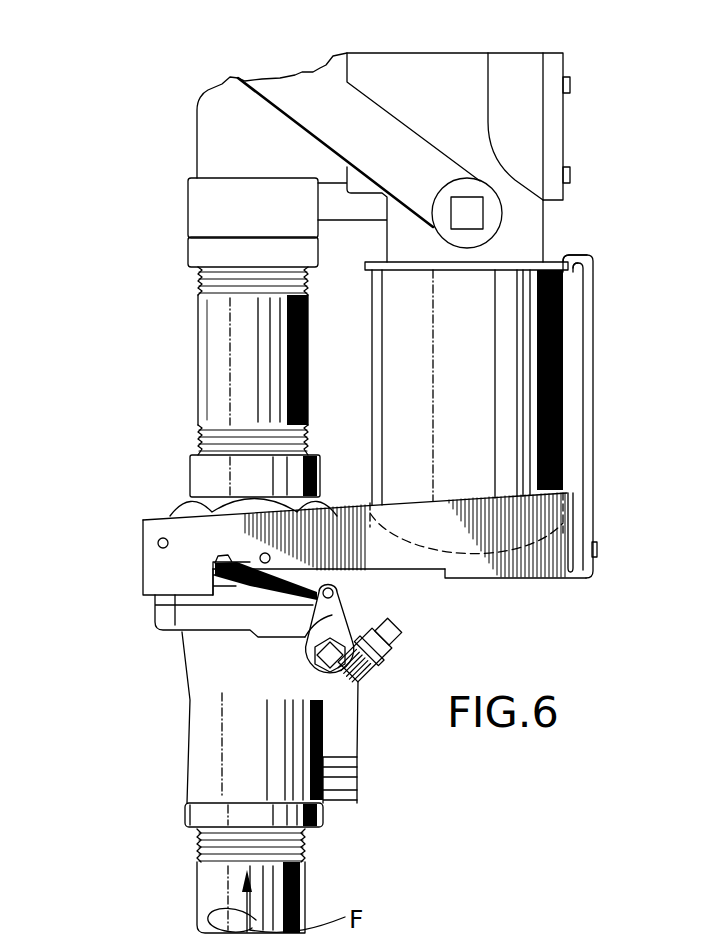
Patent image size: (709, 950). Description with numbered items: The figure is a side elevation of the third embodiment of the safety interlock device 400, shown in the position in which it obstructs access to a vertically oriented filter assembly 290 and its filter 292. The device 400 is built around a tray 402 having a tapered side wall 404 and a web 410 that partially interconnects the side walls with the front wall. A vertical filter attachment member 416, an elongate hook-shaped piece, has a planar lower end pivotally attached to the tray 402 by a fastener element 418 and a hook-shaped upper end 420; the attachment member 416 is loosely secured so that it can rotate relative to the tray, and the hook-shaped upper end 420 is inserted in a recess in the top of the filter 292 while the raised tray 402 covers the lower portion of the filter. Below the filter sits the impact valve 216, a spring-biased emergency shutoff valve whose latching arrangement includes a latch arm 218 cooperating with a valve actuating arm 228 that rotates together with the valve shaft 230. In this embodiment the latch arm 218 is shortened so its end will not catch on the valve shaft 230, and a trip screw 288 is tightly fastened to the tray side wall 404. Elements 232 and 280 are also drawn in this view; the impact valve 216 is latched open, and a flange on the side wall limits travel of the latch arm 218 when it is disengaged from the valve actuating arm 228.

The impact valve 216 is at (186, 733).
The latch arm 218 is at (345, 596).
The valve actuating arm 228 is at (306, 617).
The valve shaft 230 is at (362, 672).
The bracket 232 is at (231, 595).
The mounting plate 280 is at (156, 542).
The trip screw 288 is at (263, 553).
The filter assembly 290 is at (572, 136).
The filter 292 is at (483, 343).
The safety interlock device 400 is at (603, 605).
The tray 402 is at (482, 592).
The tapered side wall 404 is at (487, 503).
The web 410 is at (523, 583).
The vertical filter attachment member 416 is at (598, 388).
The fastener element 418 is at (597, 550).
The hook-shaped upper end 420 is at (575, 252).